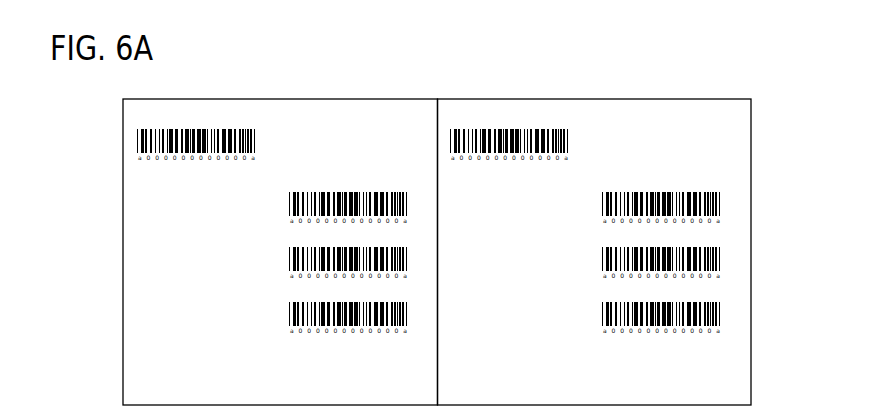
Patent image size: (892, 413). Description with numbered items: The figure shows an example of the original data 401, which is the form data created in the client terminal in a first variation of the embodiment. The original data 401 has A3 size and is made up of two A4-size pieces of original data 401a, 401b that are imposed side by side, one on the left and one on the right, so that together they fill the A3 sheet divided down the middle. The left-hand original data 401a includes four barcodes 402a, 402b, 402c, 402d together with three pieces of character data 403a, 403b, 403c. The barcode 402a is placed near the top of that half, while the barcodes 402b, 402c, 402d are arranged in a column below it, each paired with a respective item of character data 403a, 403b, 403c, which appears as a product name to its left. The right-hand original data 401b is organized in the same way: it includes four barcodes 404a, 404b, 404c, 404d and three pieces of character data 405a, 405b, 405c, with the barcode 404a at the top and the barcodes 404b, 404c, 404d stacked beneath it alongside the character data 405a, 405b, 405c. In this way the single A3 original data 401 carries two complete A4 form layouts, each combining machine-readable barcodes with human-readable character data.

The original data 401 is at (502, 45).
The original data 401a is at (395, 99).
The original data 401b is at (466, 99).
The barcode 402a is at (218, 130).
The barcode 402b is at (288, 199).
The barcode 402c is at (288, 253).
The barcode 402d is at (288, 306).
The character data 403a is at (137, 216).
The character data 403b is at (137, 268).
The character data 403c is at (137, 321).
The barcode 404a is at (545, 129).
The barcode 404b is at (722, 206).
The barcode 404c is at (722, 262).
The barcode 404d is at (722, 316).
The character data 405a is at (538, 198).
The character data 405b is at (538, 258).
The character data 405c is at (538, 317).